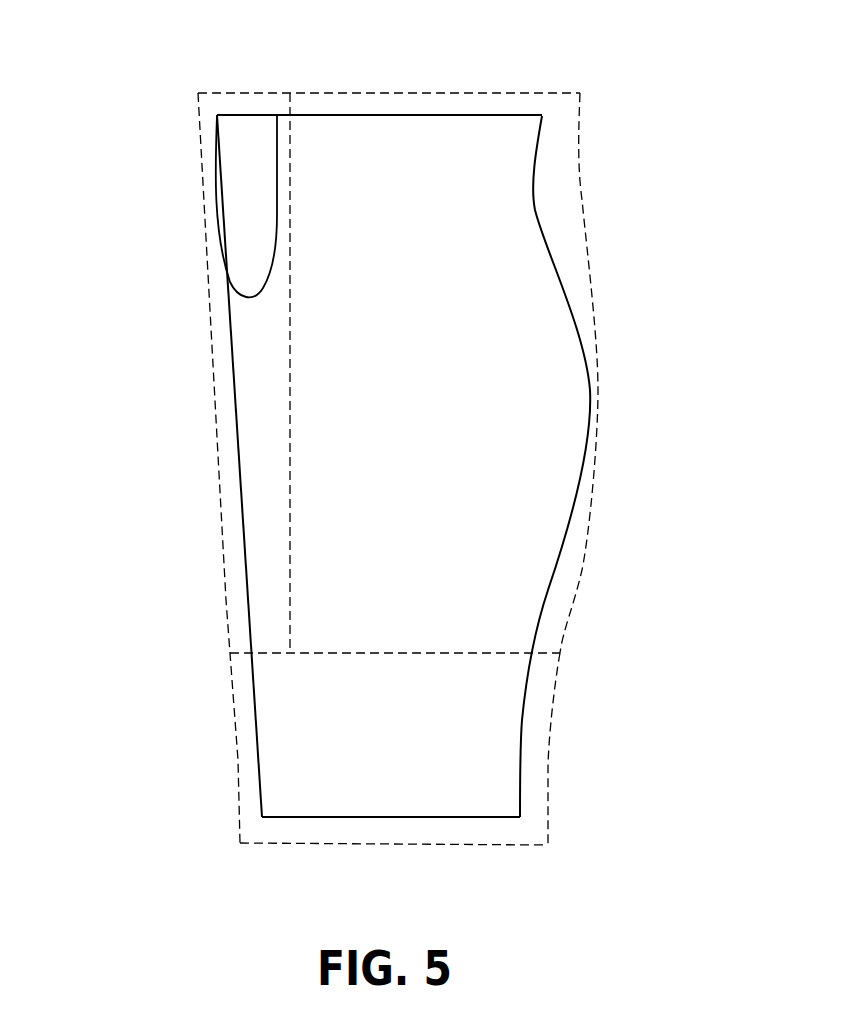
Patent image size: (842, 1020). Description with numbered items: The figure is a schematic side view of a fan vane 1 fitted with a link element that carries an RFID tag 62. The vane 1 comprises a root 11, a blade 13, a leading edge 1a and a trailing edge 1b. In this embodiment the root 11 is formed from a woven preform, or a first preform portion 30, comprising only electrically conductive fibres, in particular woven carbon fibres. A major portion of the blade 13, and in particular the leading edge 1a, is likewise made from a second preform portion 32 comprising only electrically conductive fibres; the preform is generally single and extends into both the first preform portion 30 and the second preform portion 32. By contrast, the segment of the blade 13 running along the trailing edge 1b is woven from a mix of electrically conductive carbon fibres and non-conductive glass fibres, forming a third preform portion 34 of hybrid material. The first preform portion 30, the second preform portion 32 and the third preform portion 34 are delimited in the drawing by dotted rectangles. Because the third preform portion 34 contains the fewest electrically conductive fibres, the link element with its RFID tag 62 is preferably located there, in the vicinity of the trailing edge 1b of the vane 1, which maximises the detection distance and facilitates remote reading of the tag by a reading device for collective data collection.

The vane 1 is at (418, 413).
The leading edge 1a is at (572, 513).
The trailing edge 1b is at (242, 495).
The root 11 is at (258, 748).
The blade 13 is at (400, 110).
The first preform portion 30 is at (552, 770).
The second preform portion 32 is at (386, 435).
The third preform portion 34 is at (210, 288).
The RFID tag 62 is at (213, 172).